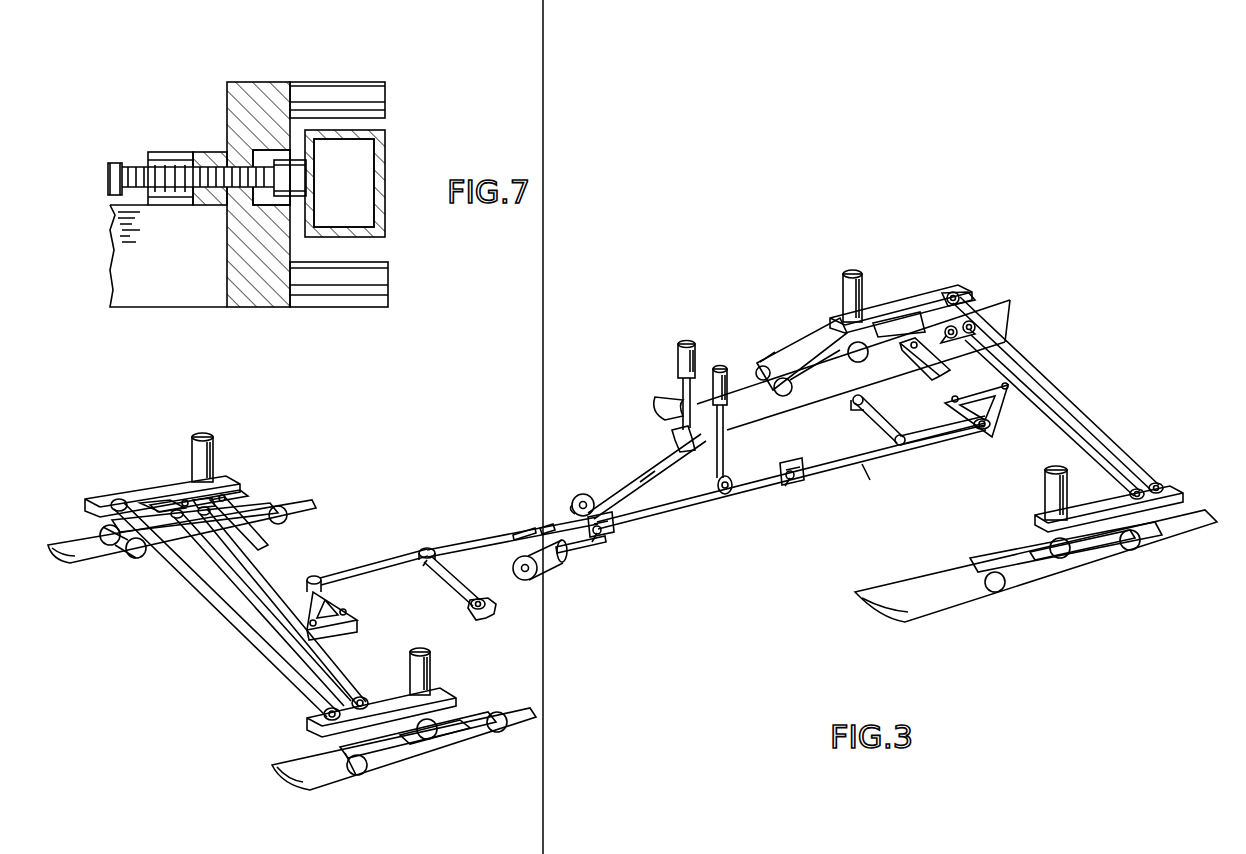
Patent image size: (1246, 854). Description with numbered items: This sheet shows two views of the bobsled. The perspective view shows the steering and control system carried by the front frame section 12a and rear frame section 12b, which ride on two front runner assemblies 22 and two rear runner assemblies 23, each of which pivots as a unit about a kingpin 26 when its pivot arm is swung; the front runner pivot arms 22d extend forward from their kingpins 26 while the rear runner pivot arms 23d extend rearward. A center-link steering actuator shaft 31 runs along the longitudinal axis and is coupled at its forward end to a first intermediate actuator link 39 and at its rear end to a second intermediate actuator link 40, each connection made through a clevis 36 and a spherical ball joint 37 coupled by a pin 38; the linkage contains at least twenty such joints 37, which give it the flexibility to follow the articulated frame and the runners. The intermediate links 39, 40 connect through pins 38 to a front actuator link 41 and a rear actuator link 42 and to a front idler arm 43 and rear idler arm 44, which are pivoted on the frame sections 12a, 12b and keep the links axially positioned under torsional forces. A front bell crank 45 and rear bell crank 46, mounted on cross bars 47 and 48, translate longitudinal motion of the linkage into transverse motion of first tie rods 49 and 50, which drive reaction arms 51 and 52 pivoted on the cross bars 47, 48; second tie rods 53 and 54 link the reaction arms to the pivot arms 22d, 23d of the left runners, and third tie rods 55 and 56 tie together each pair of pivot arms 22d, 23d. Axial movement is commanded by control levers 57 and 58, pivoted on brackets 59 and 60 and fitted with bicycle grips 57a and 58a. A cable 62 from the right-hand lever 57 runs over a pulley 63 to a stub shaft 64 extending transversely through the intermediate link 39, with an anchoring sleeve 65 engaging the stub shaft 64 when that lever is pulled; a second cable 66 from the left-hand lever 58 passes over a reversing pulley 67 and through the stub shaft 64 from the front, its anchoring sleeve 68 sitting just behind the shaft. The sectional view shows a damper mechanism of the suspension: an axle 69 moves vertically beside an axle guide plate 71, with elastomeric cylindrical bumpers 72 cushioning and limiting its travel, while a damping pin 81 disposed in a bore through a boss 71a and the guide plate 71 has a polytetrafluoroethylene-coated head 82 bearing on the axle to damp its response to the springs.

In FIG. 3, the front frame section 12a is at (496, 610).
In FIG. 7, the rear frame section 12b is at (168, 320).
In FIG. 3, the rear frame section 12b is at (848, 410).
In FIG. 3, the front runner assembly 22 is at (114, 577).
In FIG. 3, the front runner pivot arm 22d is at (148, 493).
In FIG. 3, the rear runner assembly 23 is at (812, 333).
In FIG. 3, the rear runner pivot arm 23d is at (905, 302).
In FIG. 3, the kingpin 26 is at (213, 460).
In FIG. 3, the center-link steering actuator shaft 31 is at (705, 515).
In FIG. 3, the clevis 36 is at (608, 520).
In FIG. 3, the spherical ball joint 37 is at (423, 566).
In FIG. 3, the pin 38 is at (427, 548).
In FIG. 3, the first intermediate actuator link 39 is at (378, 570).
In FIG. 3, the second intermediate actuator link 40 is at (867, 470).
In FIG. 3, the front actuator link 41 is at (484, 557).
In FIG. 3, the rear actuator link 42 is at (930, 448).
In FIG. 3, the front idler arm 43 is at (452, 590).
In FIG. 3, the rear idler arm 44 is at (868, 445).
In FIG. 3, the front bell crank 45 is at (343, 616).
In FIG. 3, the rear bell crank 46 is at (992, 437).
In FIG. 3, the front cross bar 47 is at (268, 548).
In FIG. 3, the rear cross bar 48 is at (925, 374).
In FIG. 3, the first front tie rod 49 is at (273, 585).
In FIG. 3, the first rear tie rod 50 is at (985, 335).
In FIG. 3, the front reaction arm 51 is at (225, 492).
In FIG. 3, the rear reaction arm 52 is at (948, 295).
In FIG. 3, the second front tie rod 53 is at (330, 672).
In FIG. 3, the second rear tie rod 54 is at (1055, 417).
In FIG. 3, the third front tie rod 55 is at (285, 680).
In FIG. 3, the third rear tie rod 56 is at (1068, 397).
In FIG. 3, the right-hand control lever 57 is at (683, 395).
In FIG. 3, the bicycle grip 57a is at (688, 344).
In FIG. 3, the left-hand control lever 58 is at (724, 442).
In FIG. 3, the bicycle grip 58a is at (719, 369).
In FIG. 3, the bracket 59 is at (672, 438).
In FIG. 3, the bracket 60 is at (730, 494).
In FIG. 3, the cable 62 is at (645, 477).
In FIG. 3, the pulley 63 is at (577, 497).
In FIG. 3, the stub shaft 64 is at (546, 528).
In FIG. 3, the anchoring sleeve 65 is at (513, 536).
In FIG. 3, the second cable 66 is at (655, 479).
In FIG. 3, the reversing pulley 67 is at (532, 580).
In FIG. 3, the anchoring sleeve 68 is at (580, 553).
In FIG. 7, the rear axle 69 is at (385, 150).
In FIG. 7, the axle guide plate 71 is at (255, 310).
In FIG. 7, the boss 71a is at (172, 152).
In FIG. 7, the cylindrical bumper 72 is at (318, 82).
In FIG. 7, the damping pin 81 is at (108, 172).
In FIG. 7, the pin head 82 is at (290, 178).